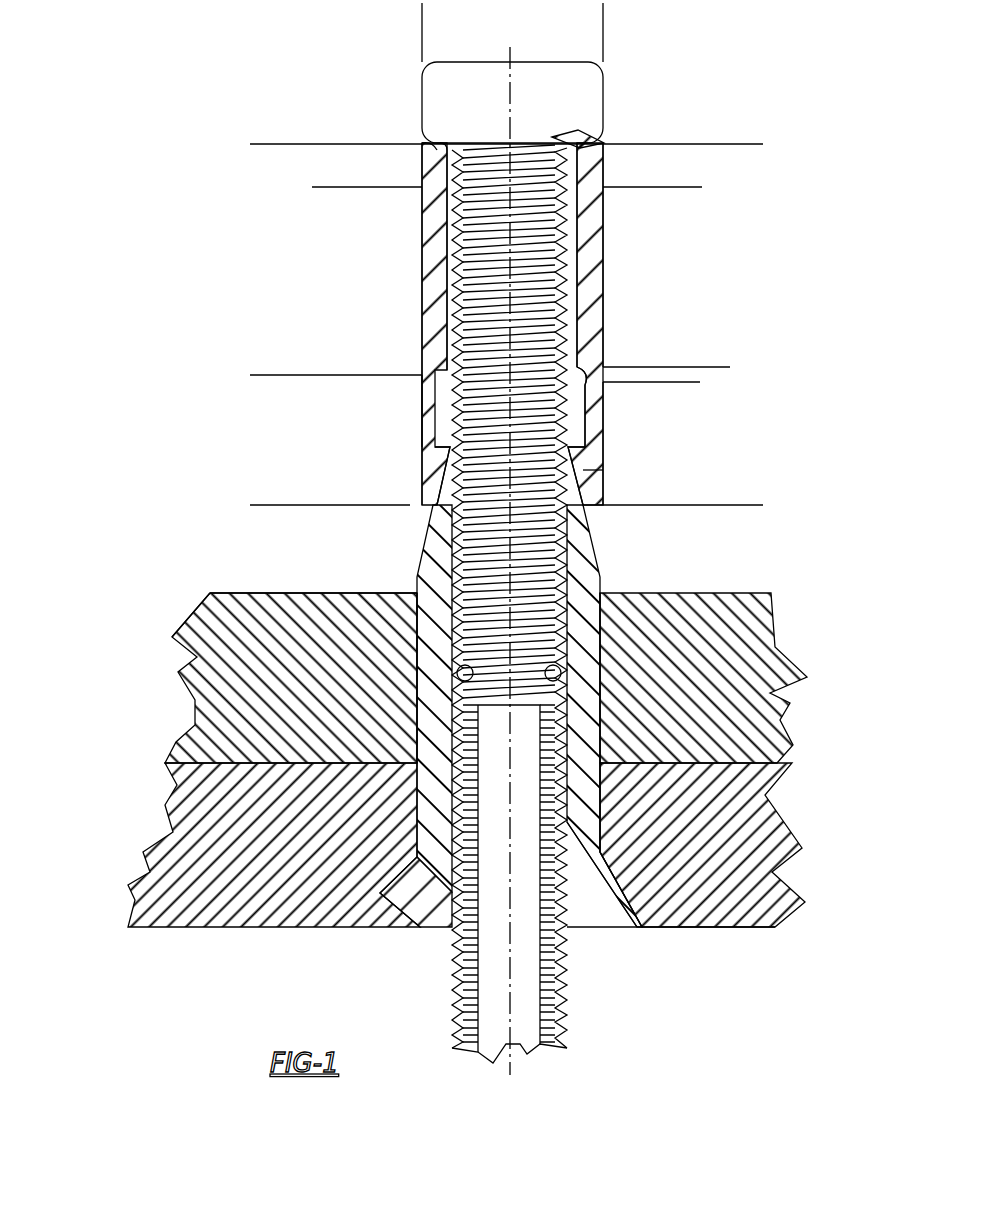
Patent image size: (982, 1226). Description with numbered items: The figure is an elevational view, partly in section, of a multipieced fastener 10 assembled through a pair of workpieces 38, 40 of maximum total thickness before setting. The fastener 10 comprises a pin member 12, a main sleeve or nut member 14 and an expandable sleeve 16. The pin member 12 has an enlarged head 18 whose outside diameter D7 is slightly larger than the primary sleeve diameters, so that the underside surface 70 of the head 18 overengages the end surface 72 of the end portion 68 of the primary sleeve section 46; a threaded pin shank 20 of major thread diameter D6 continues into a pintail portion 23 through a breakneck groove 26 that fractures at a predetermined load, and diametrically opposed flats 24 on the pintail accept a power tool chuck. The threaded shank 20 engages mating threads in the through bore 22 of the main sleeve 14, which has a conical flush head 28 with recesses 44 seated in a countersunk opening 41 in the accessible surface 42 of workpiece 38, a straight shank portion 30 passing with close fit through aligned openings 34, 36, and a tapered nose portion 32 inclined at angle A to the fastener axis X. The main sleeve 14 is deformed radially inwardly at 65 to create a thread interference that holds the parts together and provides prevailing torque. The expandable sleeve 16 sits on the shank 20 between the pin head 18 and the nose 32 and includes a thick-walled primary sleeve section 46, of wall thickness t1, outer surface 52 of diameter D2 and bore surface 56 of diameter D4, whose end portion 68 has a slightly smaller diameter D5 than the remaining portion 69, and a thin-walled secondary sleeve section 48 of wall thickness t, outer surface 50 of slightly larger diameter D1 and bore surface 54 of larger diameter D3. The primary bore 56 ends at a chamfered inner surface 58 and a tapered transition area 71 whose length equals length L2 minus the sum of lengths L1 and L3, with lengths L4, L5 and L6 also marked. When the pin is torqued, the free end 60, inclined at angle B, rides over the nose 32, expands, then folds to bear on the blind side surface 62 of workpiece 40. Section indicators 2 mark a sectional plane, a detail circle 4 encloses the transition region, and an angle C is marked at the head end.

The multipieced fastener 10 is at (501, 533).
The pin member 12 is at (491, 299).
The main sleeve 14 is at (560, 604).
The expandable sleeve 16 is at (590, 227).
The enlarged head 18 is at (512, 73).
The threaded pin shank 20 is at (520, 345).
The through bore 22 is at (453, 736).
The pintail portion 23 is at (600, 790).
The flats 24 is at (490, 1015).
The breakneck groove 26 is at (537, 672).
The conical head 28 is at (640, 912).
The straight shank portion 30 is at (637, 927).
The tapered nose portion 32 is at (588, 485).
The opening 34 is at (603, 770).
The opening 36 is at (600, 704).
The workpiece 38 is at (268, 858).
The workpiece 40 is at (295, 658).
The countersunk opening 41 is at (380, 893).
The accessible surface 42 is at (757, 930).
The recesses 44 is at (585, 913).
The primary sleeve section 46 is at (270, 505).
The secondary sleeve section 48 is at (421, 440).
The outer surface 50 is at (417, 386).
The outer surface 52 is at (600, 262).
The bore surface 54 is at (440, 470).
The bore surface 56 is at (447, 213).
The chamfered inner surface 58 is at (600, 378).
The free end 60 is at (597, 508).
The blind side surface 62 is at (305, 593).
The radially inward deformation 65 is at (417, 645).
The end portion 68 is at (318, 375).
The remaining portion 69 is at (357, 281).
The underside surface 70 is at (422, 148).
The transition area 71 is at (696, 376).
The end surface 72 is at (444, 143).
The section line 2- 2 is at (620, 1114).
The detail circle 4 is at (400, 323).
The angle A is at (420, 510).
The angle B is at (683, 496).
The angle C is at (646, 160).
The diameter D1 is at (387, 400).
The diameter D2 is at (605, 290).
The diameter D3 is at (449, 428).
The diameter D4 is at (449, 193).
The diameter D5 is at (403, 157).
The major thread diameter D6 is at (579, 170).
The diameter D7 is at (603, 15).
The length L1 is at (698, 382).
The length L2 is at (748, 505).
The length L3 is at (723, 367).
The length L4 is at (685, 120).
The length L5 is at (698, 187).
The length L6 is at (440, 447).
The wall thickness t is at (436, 438).
The wall thickness t1 is at (421, 237).
The axis X is at (505, 1065).